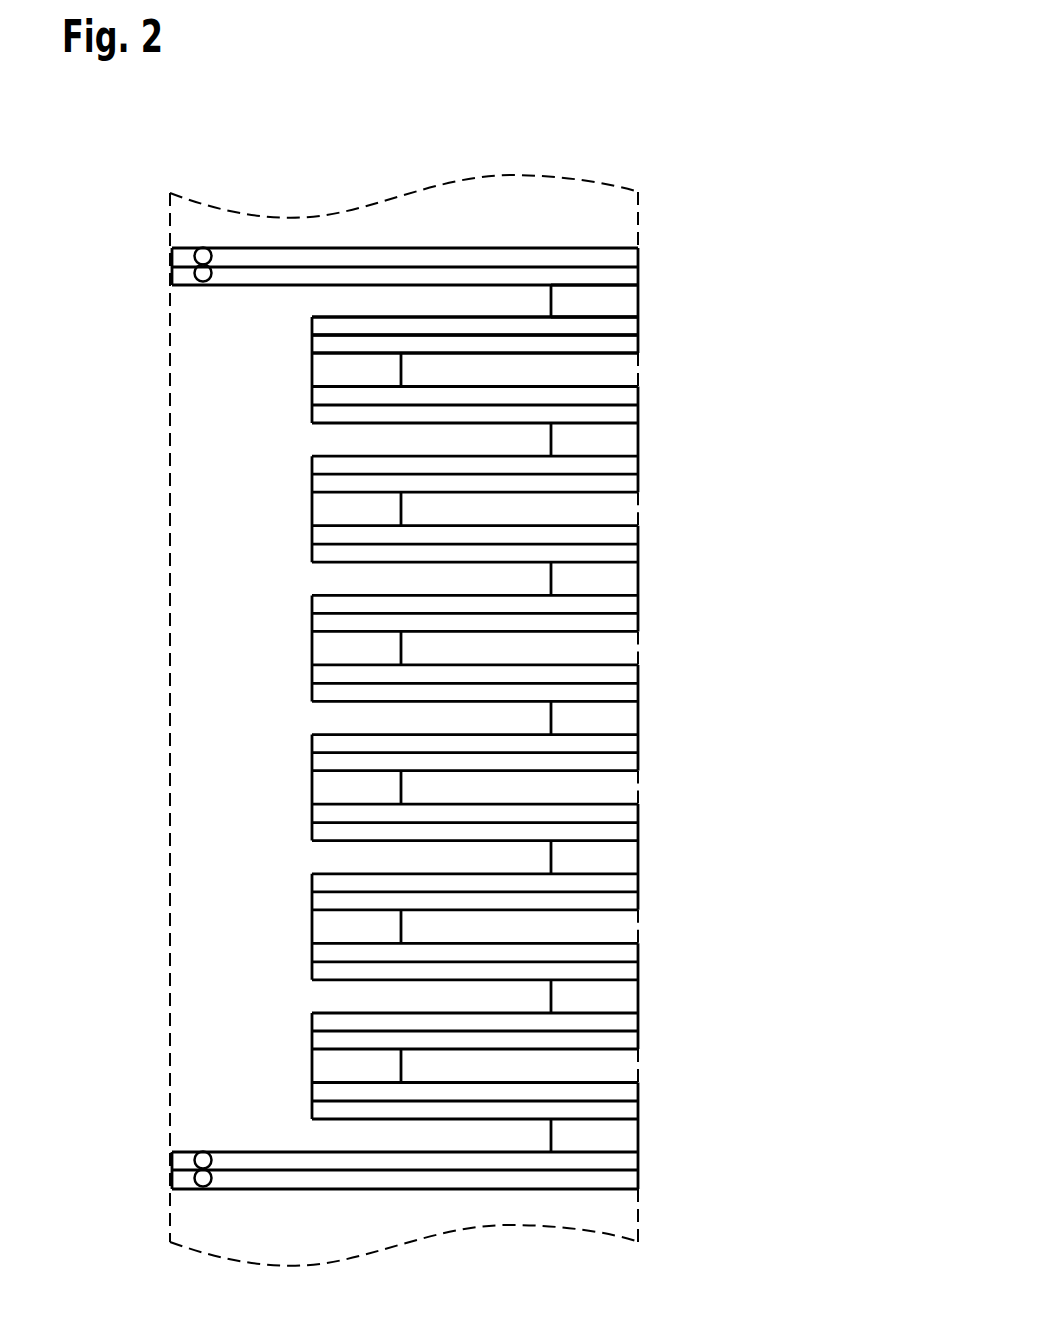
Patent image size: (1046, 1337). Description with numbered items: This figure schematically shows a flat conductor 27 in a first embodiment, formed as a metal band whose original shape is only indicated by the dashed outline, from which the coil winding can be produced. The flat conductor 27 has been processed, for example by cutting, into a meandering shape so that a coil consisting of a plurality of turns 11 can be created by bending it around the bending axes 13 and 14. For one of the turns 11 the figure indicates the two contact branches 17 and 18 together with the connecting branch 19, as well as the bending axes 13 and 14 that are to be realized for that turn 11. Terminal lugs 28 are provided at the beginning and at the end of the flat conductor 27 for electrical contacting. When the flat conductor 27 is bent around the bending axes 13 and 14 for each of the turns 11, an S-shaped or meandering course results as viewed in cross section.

The turn 11 is at (784, 315).
The bending axis 13 is at (494, 265).
The bending axis 14 is at (360, 335).
The contact branch 17 is at (620, 258).
The contact branch 18 is at (620, 347).
The connecting branch 19 is at (620, 305).
The flat conductor 27 is at (699, 128).
The terminal lug 28 is at (203, 255).